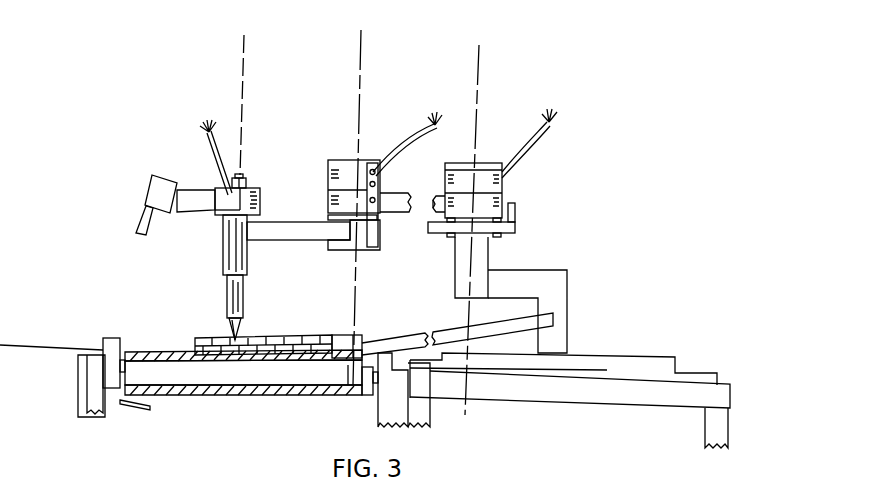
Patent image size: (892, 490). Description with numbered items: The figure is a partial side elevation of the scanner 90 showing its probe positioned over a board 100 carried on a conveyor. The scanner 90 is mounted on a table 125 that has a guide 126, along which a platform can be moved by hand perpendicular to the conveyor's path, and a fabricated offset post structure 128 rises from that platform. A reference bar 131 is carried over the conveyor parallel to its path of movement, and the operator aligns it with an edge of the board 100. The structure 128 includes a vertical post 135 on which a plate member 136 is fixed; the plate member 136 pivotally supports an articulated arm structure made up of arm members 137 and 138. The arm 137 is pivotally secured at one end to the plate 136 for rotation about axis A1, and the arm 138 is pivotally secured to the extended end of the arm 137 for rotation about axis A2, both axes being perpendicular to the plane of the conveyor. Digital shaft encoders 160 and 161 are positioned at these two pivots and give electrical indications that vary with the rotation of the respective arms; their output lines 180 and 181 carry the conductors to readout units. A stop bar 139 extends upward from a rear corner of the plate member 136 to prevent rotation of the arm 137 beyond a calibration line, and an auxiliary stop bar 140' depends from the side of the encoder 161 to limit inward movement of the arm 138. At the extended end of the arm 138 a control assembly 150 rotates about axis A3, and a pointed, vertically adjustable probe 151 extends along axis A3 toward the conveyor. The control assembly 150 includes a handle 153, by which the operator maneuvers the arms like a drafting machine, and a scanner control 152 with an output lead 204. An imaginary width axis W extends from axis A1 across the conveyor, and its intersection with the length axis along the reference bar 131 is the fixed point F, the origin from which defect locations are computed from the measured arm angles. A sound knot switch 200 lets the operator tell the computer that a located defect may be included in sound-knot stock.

The scanner 90 is at (509, 129).
The board 100 is at (242, 331).
The table 125 is at (732, 388).
The guide 126 is at (700, 372).
The offset post structure 128 is at (571, 290).
The reference bar 131 is at (345, 335).
The vertical post 135 is at (456, 262).
The plate member 136 is at (517, 228).
The arm member 137 is at (433, 212).
The arm member 138 is at (278, 222).
The stop bar 139 is at (514, 206).
The auxiliary stop bar 140' is at (370, 196).
The control assembly 150 is at (255, 179).
The probe 151 is at (241, 333).
The scanner control 152 is at (164, 176).
The handle 153 is at (135, 222).
The digital shaft encoder 160 is at (481, 168).
The digital shaft encoder 161 is at (358, 157).
The output line 180 is at (549, 150).
The output line 181 is at (434, 144).
The sound knot switch 200 is at (73, 397).
The output lead 204 is at (228, 125).
The width axis W is at (50, 346).
The fixed point F is at (198, 338).
The axis A1 is at (478, 65).
The axis A2 is at (360, 62).
The axis A3 is at (243, 55).